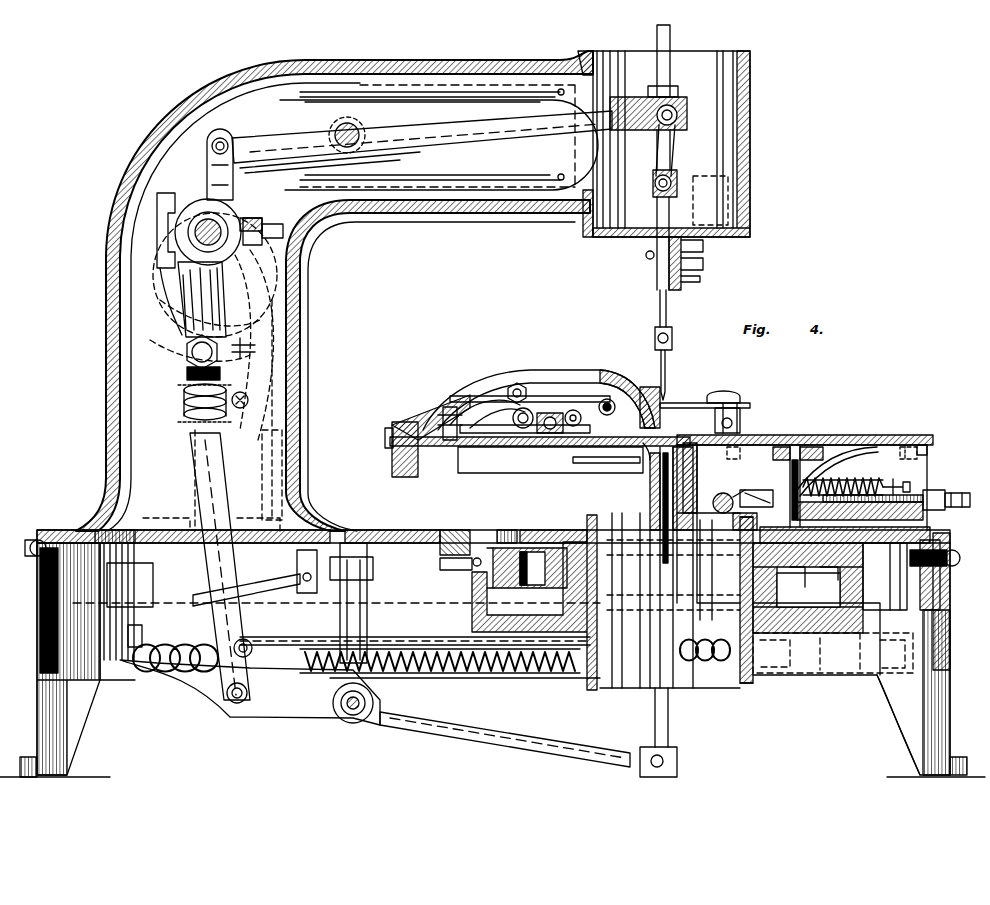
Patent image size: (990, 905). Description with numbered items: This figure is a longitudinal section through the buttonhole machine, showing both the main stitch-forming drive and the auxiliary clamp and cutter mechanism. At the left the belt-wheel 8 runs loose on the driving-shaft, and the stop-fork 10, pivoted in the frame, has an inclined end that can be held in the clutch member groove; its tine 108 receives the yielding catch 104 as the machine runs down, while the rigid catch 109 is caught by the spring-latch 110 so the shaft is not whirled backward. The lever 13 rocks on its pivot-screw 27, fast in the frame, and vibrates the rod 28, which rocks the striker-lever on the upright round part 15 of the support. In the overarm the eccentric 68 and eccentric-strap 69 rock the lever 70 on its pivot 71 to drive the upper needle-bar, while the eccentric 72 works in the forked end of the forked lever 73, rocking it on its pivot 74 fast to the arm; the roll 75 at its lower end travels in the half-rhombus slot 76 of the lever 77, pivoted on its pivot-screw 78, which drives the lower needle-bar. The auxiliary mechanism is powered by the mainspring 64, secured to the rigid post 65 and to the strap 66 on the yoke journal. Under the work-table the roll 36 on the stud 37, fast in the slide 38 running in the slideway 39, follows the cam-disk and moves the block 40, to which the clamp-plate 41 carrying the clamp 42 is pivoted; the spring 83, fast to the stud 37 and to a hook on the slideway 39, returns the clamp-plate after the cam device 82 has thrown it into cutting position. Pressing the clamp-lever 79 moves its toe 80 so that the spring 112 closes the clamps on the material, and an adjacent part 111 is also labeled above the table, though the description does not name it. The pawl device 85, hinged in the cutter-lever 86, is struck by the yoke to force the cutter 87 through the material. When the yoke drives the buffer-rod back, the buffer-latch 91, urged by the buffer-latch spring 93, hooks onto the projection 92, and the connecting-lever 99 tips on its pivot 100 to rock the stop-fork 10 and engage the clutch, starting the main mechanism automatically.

The belt-wheel 8 is at (143, 178).
The stop-fork 10 is at (205, 561).
The lever 13 is at (250, 644).
The upright round part 15 is at (655, 540).
The pivot-screw 27 is at (186, 415).
The rod 28 is at (432, 640).
The roll 36 is at (808, 588).
The stud 37 is at (788, 462).
The slide 38 is at (911, 576).
The slideway 39 is at (925, 527).
The block 40 is at (838, 444).
The clamp-plate 41 is at (907, 444).
The clamp 42 is at (648, 386).
The mainspring 64 is at (522, 674).
The rigid post 65 is at (128, 585).
The strap 66 is at (833, 653).
The eccentric 68 is at (256, 208).
The eccentric-strap 69 is at (232, 176).
The lever 70 is at (422, 142).
The pivot 71 is at (362, 133).
The eccentric 72 is at (168, 268).
The forked lever 73 is at (210, 150).
The pivot 74 is at (186, 352).
The roll 75 is at (222, 704).
The slot 76 is at (180, 644).
The lever 77 is at (612, 752).
The pivot-screw 78 is at (353, 716).
The clamp-lever 79 is at (736, 398).
The toe 80 is at (562, 436).
The cam device 82 is at (618, 470).
The spring 83 is at (893, 485).
The pawl device 85 is at (392, 470).
The cutter-lever 86 is at (614, 374).
The cutter 87 is at (672, 408).
The buffer-latch 91 is at (724, 492).
The projection 92 is at (803, 488).
The buffer-latch spring 93 is at (855, 486).
The connecting-lever 99 is at (200, 598).
The pivot 100 is at (300, 575).
The yielding catch 104 is at (283, 235).
The tine 108 is at (250, 345).
The rigid catch 109 is at (284, 221).
The spring-latch 110 is at (275, 324).
The shaft 111 is at (530, 378).
The spring 112 is at (517, 382).